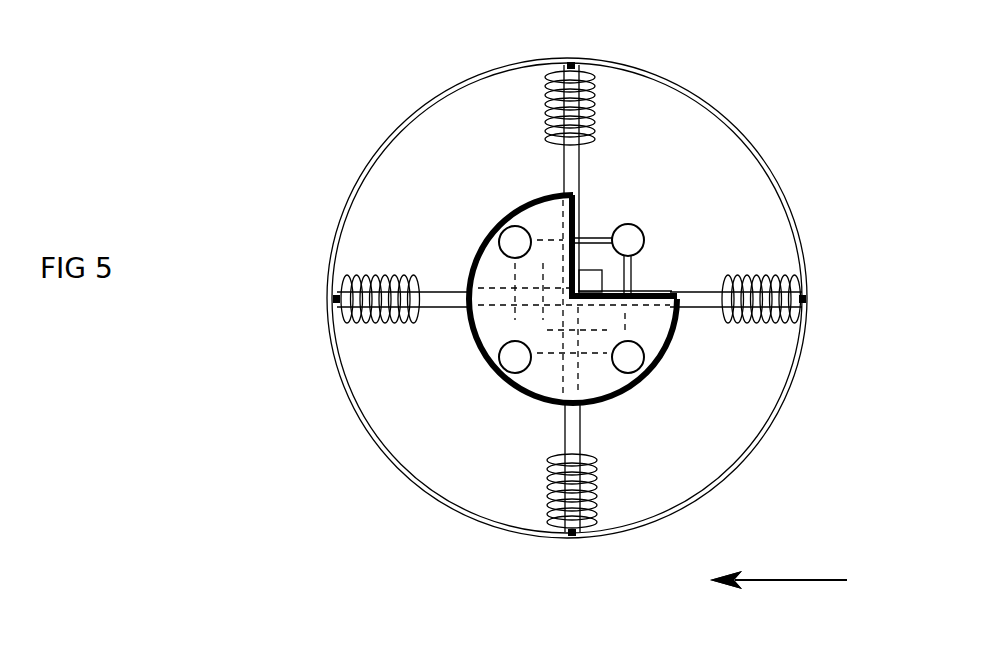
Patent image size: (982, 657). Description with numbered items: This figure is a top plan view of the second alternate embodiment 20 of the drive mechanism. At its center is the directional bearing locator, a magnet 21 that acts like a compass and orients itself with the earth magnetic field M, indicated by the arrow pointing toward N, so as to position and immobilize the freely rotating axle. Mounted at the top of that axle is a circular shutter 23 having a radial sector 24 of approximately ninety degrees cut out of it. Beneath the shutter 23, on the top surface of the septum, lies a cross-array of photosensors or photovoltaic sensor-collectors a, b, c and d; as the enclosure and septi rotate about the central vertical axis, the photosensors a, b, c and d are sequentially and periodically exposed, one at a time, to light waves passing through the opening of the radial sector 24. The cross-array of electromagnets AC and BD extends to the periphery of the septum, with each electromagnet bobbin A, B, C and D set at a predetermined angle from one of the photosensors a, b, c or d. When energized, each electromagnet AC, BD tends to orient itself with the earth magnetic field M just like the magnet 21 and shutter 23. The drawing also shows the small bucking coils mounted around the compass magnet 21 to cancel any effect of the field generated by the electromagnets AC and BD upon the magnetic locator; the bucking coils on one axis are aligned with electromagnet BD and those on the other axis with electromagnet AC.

The second alternate embodiment of the drive mechanism 20 is at (762, 99).
The magnet 21 is at (624, 245).
The circular shutter 23 is at (597, 407).
The radial sector 24 is at (641, 279).
The photosensor a is at (505, 238).
The photosensor b is at (632, 236).
The photosensor c is at (632, 360).
The photosensor d is at (510, 365).
The electromagnet bobbin A is at (372, 273).
The electromagnet bobbin B is at (545, 97).
The electromagnet bobbin C is at (757, 273).
The electromagnet bobbin D is at (545, 485).
The electromagnet AC is at (450, 312).
The electromagnet BD is at (574, 170).
The earth magnetic field M is at (787, 580).
The north pole direction N is at (719, 589).